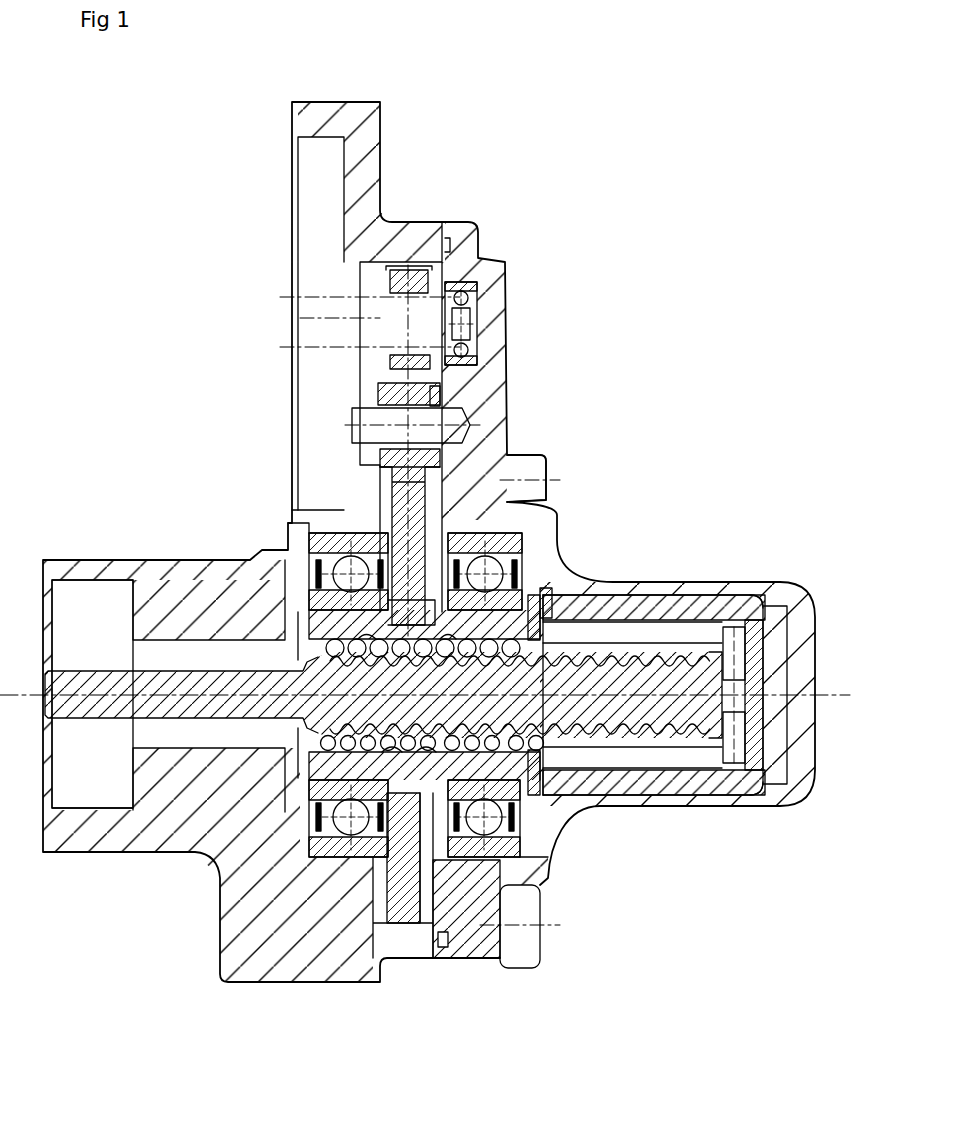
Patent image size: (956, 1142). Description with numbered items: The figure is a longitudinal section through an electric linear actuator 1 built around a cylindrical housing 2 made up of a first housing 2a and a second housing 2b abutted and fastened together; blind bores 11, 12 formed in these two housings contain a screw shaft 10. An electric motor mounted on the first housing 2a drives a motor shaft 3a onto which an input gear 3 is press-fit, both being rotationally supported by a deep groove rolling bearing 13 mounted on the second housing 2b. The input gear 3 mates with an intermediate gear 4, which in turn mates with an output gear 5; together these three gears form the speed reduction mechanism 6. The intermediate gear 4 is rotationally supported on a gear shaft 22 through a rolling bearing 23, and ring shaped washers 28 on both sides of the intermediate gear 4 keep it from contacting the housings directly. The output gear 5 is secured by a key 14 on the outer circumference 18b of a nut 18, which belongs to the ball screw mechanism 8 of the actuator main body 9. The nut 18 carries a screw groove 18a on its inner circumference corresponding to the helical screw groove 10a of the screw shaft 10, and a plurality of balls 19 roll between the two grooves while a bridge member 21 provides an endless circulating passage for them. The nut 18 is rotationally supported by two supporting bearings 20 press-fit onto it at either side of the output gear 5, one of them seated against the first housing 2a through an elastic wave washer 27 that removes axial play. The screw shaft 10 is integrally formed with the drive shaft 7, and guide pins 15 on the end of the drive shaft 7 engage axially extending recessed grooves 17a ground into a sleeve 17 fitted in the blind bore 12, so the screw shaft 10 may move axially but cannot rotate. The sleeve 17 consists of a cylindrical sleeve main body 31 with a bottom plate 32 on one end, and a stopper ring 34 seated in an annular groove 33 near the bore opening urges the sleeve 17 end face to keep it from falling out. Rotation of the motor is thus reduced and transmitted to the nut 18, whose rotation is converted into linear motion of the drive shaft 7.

The electric linear actuator 1 is at (170, 340).
The housing 2 is at (468, 1043).
The first housing 2a is at (418, 945).
The second housing 2b is at (465, 935).
The input gear 3 is at (418, 288).
The motor shaft 3a is at (340, 318).
The intermediate gear 4 is at (482, 470).
The output gear 5 is at (533, 472).
The speed reduction mechanism 6 is at (468, 372).
The drive shaft 7 is at (210, 684).
The ball screw mechanism 8 is at (565, 808).
The actuator main body 9 is at (670, 530).
The screw shaft 10 is at (655, 797).
The screw groove 10a is at (612, 745).
The blind bore 11 is at (132, 660).
The blind bore 12 is at (614, 605).
The deep groove rolling bearing 13 is at (472, 300).
The key 14 is at (449, 543).
The guide pin 15 is at (745, 662).
The sleeve 17 is at (835, 528).
The recessed groove 17a is at (656, 628).
The nut 18 is at (300, 572).
The screw groove 18a is at (390, 735).
The outer circumference 18b is at (366, 640).
The balls 19 is at (492, 656).
The supporting bearing 20 is at (290, 852).
The bridge member 21 is at (425, 740).
The gear shaft 22 is at (380, 427).
The rolling bearing 23 is at (392, 394).
The elastic washer 27 is at (300, 522).
The washer 28 is at (450, 405).
The sleeve main body 31 is at (748, 612).
The bottom plate 32 is at (790, 612).
The annular groove 33 is at (548, 612).
The stopper ring 34 is at (537, 598).